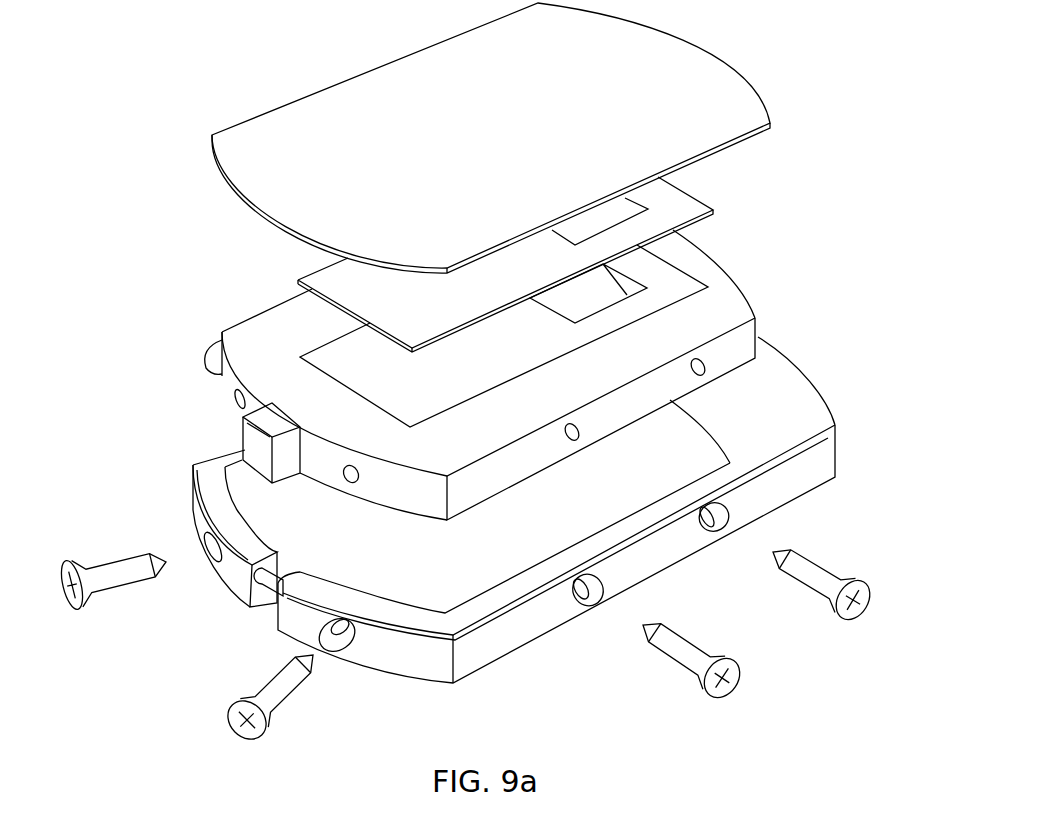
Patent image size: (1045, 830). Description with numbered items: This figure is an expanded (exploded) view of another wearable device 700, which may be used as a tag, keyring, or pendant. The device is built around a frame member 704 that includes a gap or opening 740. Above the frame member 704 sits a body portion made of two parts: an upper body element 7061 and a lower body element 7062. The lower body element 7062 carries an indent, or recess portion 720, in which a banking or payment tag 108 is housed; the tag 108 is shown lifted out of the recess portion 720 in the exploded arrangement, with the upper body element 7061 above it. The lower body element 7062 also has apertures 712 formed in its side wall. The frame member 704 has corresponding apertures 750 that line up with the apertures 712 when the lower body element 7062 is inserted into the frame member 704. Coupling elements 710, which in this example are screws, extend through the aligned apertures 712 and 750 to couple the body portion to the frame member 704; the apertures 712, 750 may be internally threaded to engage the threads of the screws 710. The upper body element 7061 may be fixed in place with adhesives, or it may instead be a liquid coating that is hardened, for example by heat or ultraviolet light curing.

The wearable device 700 is at (150, 130).
The upper body element 7061 is at (715, 56).
The banking or payment tag 108 is at (296, 280).
The lower body element 7062 is at (750, 294).
The indent (recess portion) 720 is at (683, 281).
The apertures 712 is at (351, 482).
The frame member 704 is at (835, 426).
The apertures 750 is at (584, 606).
The gap or opening 740 is at (263, 612).
The coupling elements 710 is at (466, 648).